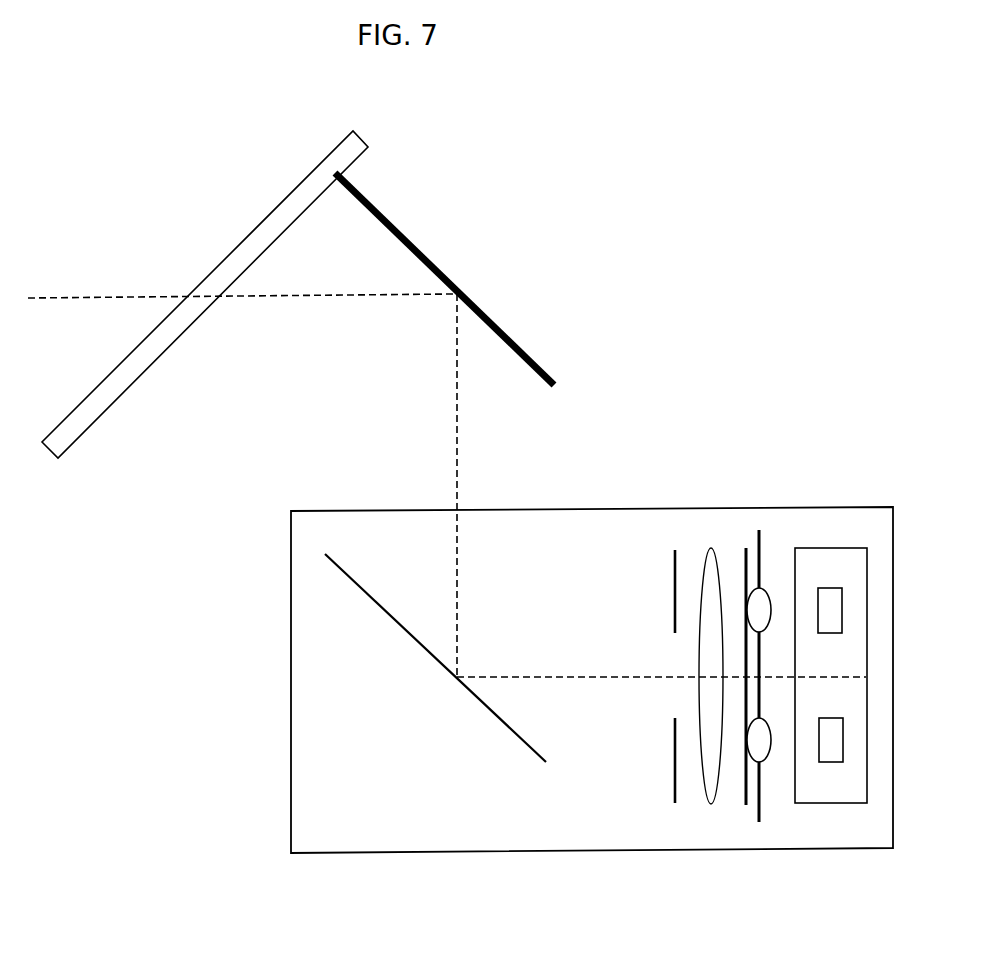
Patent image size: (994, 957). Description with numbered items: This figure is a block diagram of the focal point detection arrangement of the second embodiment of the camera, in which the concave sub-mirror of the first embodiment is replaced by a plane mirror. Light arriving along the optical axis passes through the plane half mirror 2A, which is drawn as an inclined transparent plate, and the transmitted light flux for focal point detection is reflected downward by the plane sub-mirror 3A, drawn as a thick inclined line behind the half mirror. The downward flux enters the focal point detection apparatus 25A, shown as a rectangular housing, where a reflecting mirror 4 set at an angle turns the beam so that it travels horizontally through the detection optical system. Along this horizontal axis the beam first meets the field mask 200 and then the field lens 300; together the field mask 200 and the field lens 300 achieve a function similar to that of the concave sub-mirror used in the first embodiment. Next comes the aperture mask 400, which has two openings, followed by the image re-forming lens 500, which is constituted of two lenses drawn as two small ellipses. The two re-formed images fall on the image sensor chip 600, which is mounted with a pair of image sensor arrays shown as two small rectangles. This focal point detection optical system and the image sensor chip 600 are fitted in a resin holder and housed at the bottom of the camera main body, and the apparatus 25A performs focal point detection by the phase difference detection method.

The plane half mirror 2A is at (287, 195).
The plane sub-mirror 3A is at (508, 337).
The reflecting mirror 4 is at (503, 725).
The focal point detection apparatus 25A is at (472, 853).
The field mask 200 is at (673, 788).
The field lens 300 is at (723, 793).
The aperture mask 400 is at (745, 558).
The image re-forming lens 500 is at (760, 557).
The image sensor chip 600 is at (855, 807).